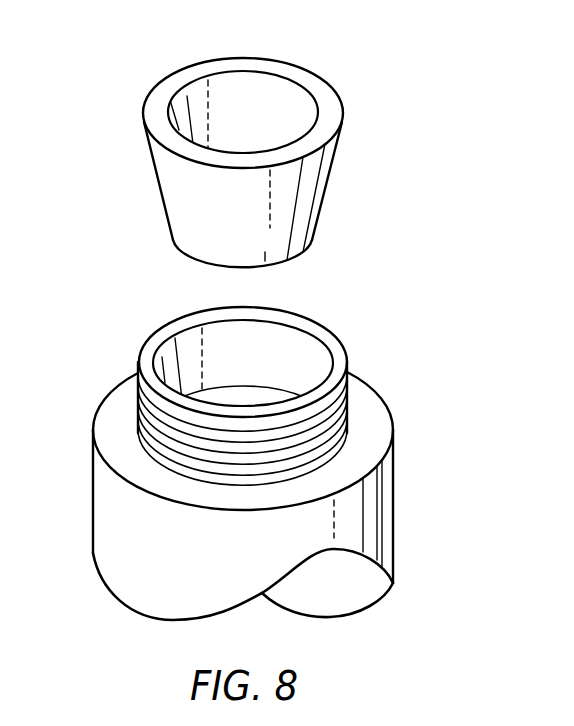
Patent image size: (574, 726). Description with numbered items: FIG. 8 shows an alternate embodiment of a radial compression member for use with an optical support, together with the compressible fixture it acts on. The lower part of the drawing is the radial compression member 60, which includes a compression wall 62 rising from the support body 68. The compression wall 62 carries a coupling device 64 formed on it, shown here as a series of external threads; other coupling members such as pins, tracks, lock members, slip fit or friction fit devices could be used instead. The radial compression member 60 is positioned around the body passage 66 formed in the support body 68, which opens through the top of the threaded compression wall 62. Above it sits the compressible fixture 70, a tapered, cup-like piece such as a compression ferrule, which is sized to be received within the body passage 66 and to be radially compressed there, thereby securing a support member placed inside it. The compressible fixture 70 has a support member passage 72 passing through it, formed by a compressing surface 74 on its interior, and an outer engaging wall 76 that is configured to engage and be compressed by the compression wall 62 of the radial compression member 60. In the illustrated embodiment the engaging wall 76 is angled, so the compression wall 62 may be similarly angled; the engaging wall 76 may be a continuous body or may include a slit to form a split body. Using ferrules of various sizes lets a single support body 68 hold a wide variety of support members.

The radial compression member 60 is at (258, 455).
The compression wall 62 is at (147, 347).
The coupling device 64 is at (140, 425).
The body passage 66 is at (279, 356).
The support body 68 is at (388, 524).
The compressible fixture 70 is at (327, 180).
The support member passage 72 is at (254, 102).
The compressing surface 74 is at (193, 93).
The engaging wall 76 is at (170, 192).